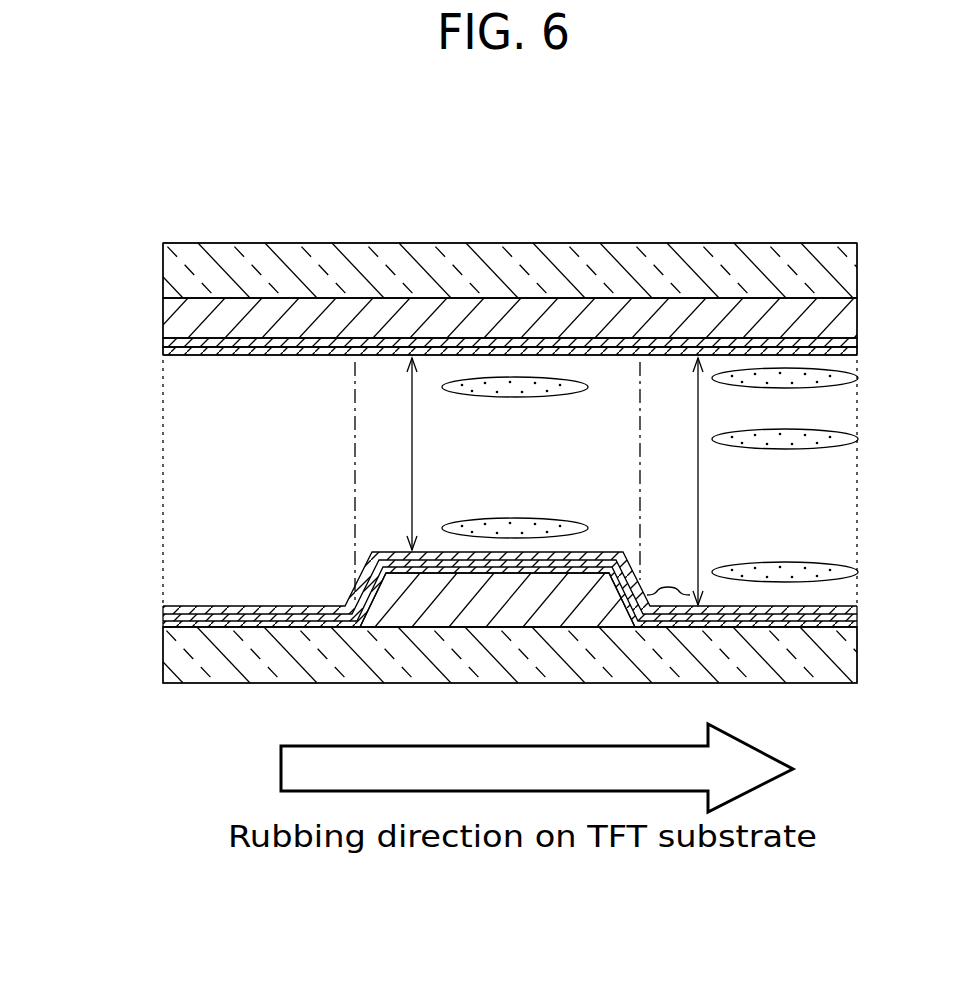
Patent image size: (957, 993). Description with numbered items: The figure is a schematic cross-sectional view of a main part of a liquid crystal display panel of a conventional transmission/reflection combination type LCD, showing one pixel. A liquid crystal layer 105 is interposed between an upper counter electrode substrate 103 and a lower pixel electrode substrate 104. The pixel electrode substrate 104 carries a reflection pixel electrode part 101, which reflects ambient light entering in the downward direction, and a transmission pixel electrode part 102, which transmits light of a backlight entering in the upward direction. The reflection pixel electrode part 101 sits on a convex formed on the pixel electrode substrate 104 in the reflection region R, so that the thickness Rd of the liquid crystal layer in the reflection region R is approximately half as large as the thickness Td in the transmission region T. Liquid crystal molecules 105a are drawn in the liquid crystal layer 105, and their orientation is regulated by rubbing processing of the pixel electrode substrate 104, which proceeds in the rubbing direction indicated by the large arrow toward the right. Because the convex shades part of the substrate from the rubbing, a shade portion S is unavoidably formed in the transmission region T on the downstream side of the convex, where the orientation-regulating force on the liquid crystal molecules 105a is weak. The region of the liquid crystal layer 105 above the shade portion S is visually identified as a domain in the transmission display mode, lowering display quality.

The reflection pixel electrode part 101 is at (595, 551).
The transmission pixel electrode part 102 is at (284, 605).
The counter electrode substrate 103 is at (158, 321).
The pixel electrode substrate 104 is at (158, 650).
The liquid crystal layer 105 is at (158, 487).
The liquid crystal molecules 105a is at (465, 398).
The thickness in reflection region Rd is at (392, 454).
The thickness in transmission region Td is at (679, 481).
The reflection region R is at (564, 472).
The transmission region T is at (745, 504).
The shade portion S is at (668, 575).